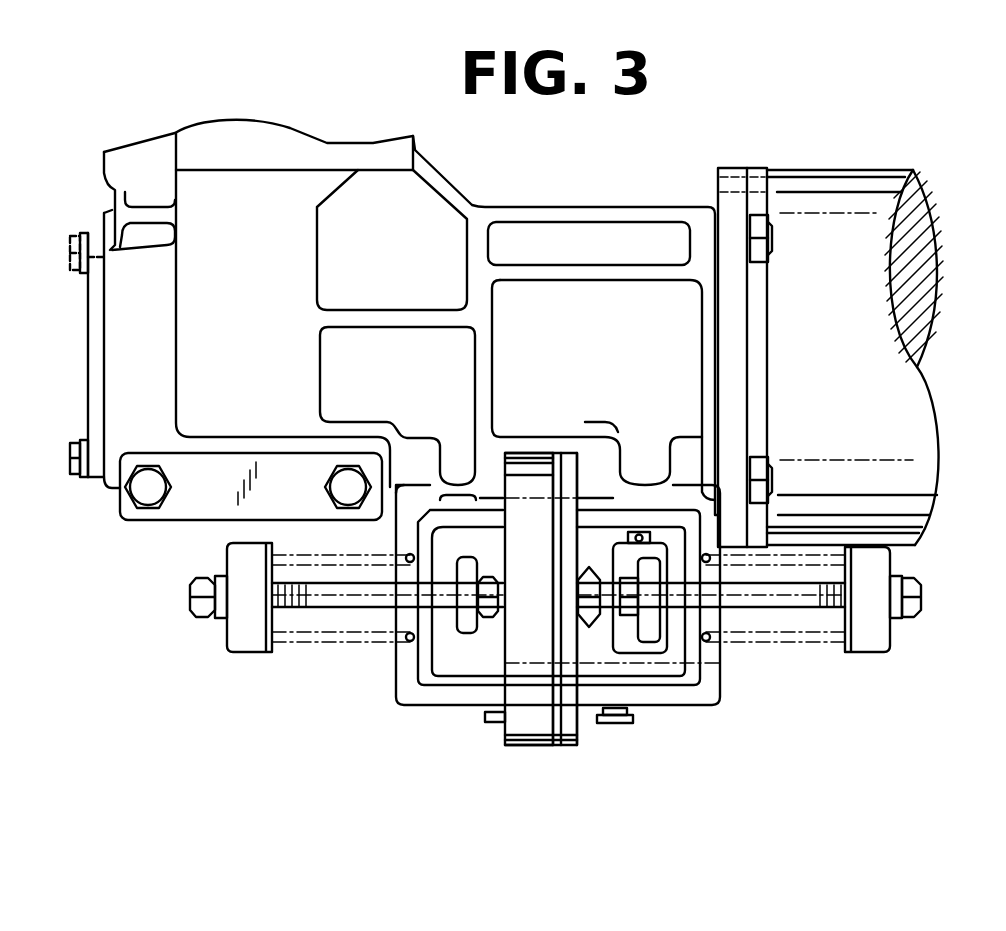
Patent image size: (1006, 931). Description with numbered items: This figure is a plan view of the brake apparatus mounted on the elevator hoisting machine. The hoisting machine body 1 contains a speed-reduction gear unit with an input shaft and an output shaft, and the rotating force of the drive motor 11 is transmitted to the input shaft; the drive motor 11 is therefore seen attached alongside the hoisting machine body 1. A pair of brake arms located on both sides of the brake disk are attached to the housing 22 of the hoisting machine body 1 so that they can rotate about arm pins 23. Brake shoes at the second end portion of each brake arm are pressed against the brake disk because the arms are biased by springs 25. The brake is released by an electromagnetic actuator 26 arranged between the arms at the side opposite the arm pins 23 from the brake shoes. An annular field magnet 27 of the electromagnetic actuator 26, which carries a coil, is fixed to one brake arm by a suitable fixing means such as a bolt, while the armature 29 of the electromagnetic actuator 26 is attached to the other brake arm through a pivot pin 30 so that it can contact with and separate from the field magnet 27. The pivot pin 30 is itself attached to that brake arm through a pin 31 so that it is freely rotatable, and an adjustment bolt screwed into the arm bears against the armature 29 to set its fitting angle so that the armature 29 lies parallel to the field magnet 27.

The hoisting machine body 1 is at (461, 179).
The drive motor 11 is at (913, 478).
The housing 22 is at (430, 663).
The arm pin 23 is at (622, 722).
The spring 25 is at (327, 645).
The electromagnetic actuator 26 is at (540, 752).
The field magnet 27 is at (525, 717).
The armature 29 is at (577, 723).
The pivot pin 30 is at (607, 663).
The pin 31 is at (645, 527).